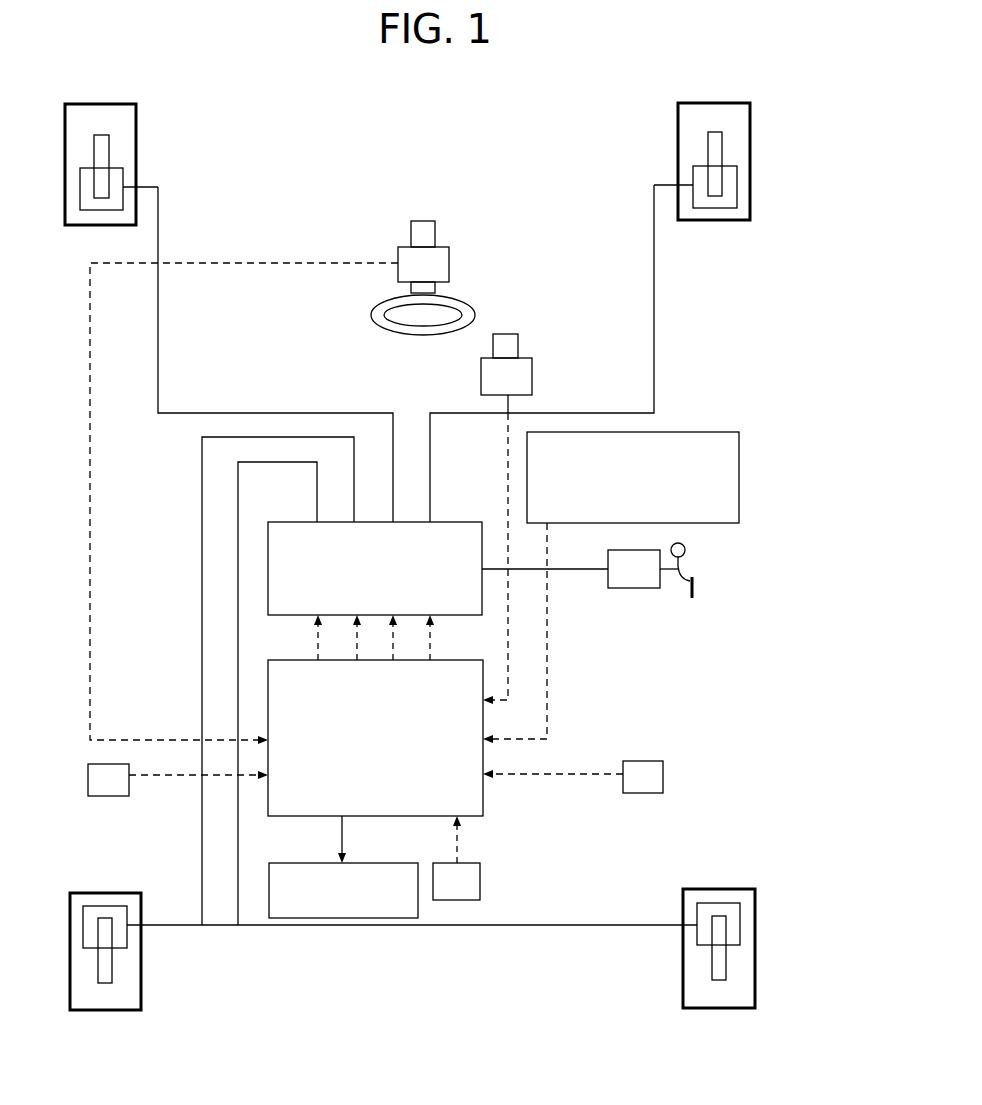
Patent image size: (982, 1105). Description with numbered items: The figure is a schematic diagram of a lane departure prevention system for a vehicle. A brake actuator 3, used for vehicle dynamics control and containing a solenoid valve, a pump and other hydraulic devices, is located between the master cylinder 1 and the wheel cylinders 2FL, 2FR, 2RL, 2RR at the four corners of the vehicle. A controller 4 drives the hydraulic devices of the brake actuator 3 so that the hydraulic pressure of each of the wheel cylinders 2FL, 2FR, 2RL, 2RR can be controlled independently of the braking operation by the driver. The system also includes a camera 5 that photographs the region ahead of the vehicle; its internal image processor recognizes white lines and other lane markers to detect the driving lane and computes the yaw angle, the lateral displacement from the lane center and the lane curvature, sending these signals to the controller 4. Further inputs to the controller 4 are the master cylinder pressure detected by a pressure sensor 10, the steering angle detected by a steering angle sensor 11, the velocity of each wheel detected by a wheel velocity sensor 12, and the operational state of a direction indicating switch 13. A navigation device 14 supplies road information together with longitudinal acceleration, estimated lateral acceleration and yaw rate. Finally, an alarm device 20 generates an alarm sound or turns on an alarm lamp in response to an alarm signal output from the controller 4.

The front left wheel cylinder 2FL is at (134, 163).
The front right wheel cylinder 2FR is at (746, 161).
The rear left wheel cylinder 2RL is at (140, 934).
The rear right wheel cylinder 2RR is at (752, 919).
The steering angle sensor 11 is at (449, 262).
The camera 5 is at (532, 372).
The brake actuator 3 is at (455, 519).
The controller 4 is at (455, 658).
The navigation device 14 is at (739, 474).
The master cylinder 1 is at (622, 549).
The direction indicating switch 13 is at (86, 777).
The pressure sensor 10 is at (663, 776).
The wheel velocity sensor 12 is at (480, 880).
The alarm device 20 is at (383, 862).